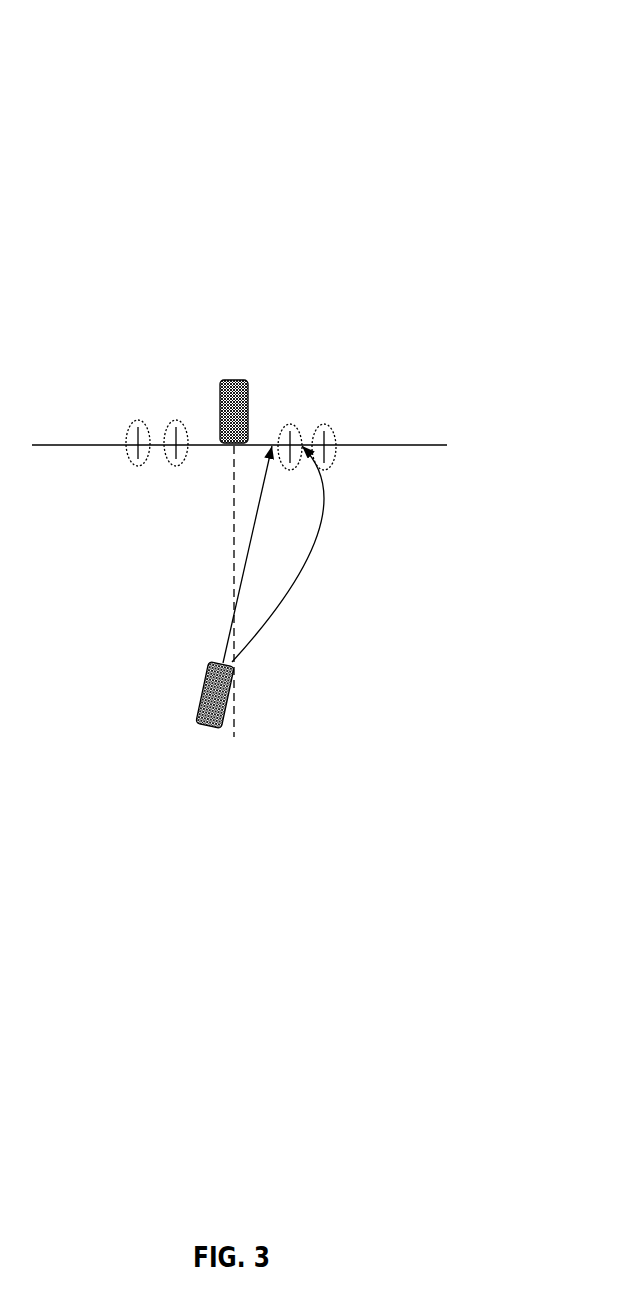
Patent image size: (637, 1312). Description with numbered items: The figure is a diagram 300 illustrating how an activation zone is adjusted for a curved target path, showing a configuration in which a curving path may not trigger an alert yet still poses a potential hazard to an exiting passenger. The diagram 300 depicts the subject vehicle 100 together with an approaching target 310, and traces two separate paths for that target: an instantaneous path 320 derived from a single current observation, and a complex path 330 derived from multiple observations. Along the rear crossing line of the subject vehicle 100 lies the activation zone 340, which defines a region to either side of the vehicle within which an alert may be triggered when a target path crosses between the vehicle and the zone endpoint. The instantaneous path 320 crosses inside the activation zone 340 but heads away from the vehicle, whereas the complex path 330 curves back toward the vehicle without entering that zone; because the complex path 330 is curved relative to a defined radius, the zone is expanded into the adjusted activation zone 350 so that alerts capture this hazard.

The diagram 300 is at (447, 117).
The subject vehicle 100 is at (240, 382).
The approaching target 310 is at (200, 708).
The instantaneous path 320 is at (242, 570).
The complex path 330 is at (317, 535).
The activation zone 340 is at (180, 415).
The adjusted activation zone 350 is at (127, 433).